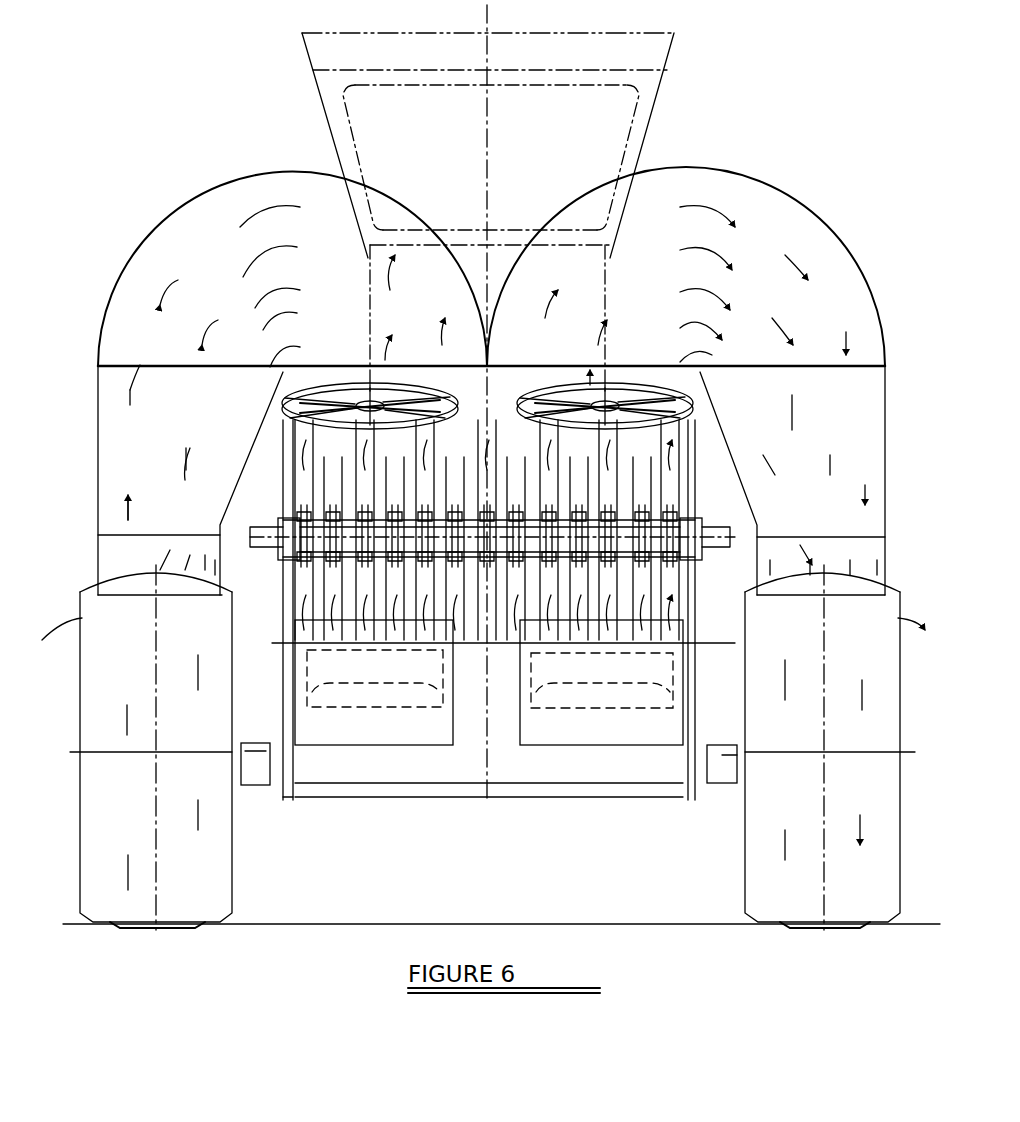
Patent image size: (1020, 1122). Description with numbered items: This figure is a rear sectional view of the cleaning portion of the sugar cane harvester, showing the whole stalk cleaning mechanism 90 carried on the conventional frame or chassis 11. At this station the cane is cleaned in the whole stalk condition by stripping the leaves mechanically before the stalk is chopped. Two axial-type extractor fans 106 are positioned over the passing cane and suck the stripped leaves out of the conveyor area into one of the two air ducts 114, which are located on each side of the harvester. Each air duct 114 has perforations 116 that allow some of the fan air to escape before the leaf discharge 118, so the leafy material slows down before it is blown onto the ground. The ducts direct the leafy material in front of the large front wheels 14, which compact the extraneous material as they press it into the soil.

The whole stalk cleaning mechanism 90 is at (673, 45).
The air duct 114 is at (200, 193).
The extractor fan 106 is at (287, 403).
The perforations 116 is at (97, 487).
The leaf discharge 118 is at (143, 597).
The large front wheel 14 is at (232, 883).
The frame 11 is at (724, 784).